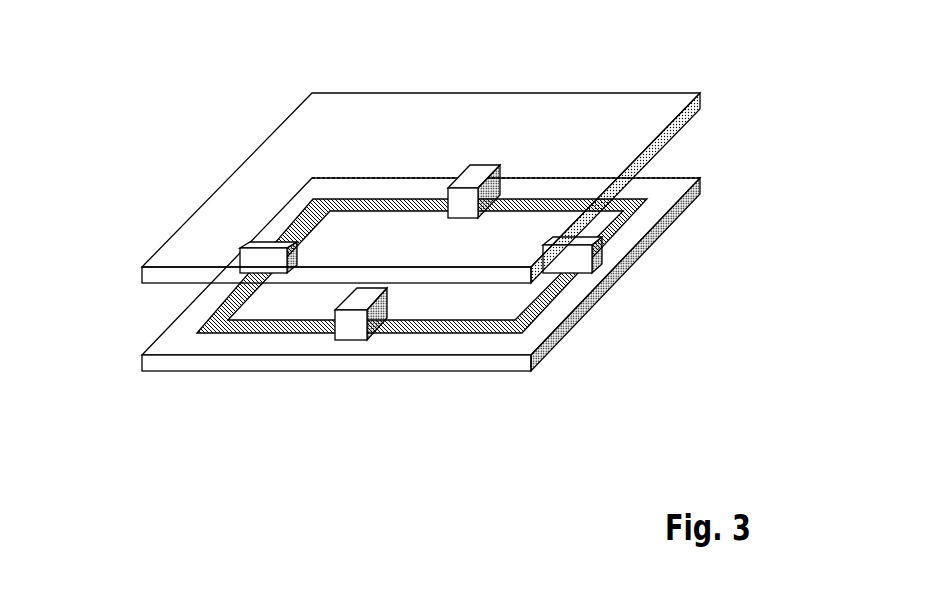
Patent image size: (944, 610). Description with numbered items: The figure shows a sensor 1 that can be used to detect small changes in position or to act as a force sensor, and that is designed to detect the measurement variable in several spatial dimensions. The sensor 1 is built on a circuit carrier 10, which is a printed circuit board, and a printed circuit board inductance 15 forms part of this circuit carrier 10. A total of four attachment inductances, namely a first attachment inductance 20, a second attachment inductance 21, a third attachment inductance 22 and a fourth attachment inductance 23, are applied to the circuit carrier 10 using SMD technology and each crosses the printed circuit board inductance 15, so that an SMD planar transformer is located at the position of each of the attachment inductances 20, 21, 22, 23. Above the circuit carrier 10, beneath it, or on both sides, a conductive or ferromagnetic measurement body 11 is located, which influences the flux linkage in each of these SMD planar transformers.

The sensor 1 is at (462, 306).
The circuit carrier 10 is at (703, 193).
The measurement body 11 is at (703, 102).
The printed circuit board inductance 15 is at (612, 218).
The first attachment inductance 20 is at (350, 322).
The second attachment inductance 21 is at (472, 179).
The third attachment inductance 22 is at (587, 252).
The fourth attachment inductance 23 is at (257, 253).